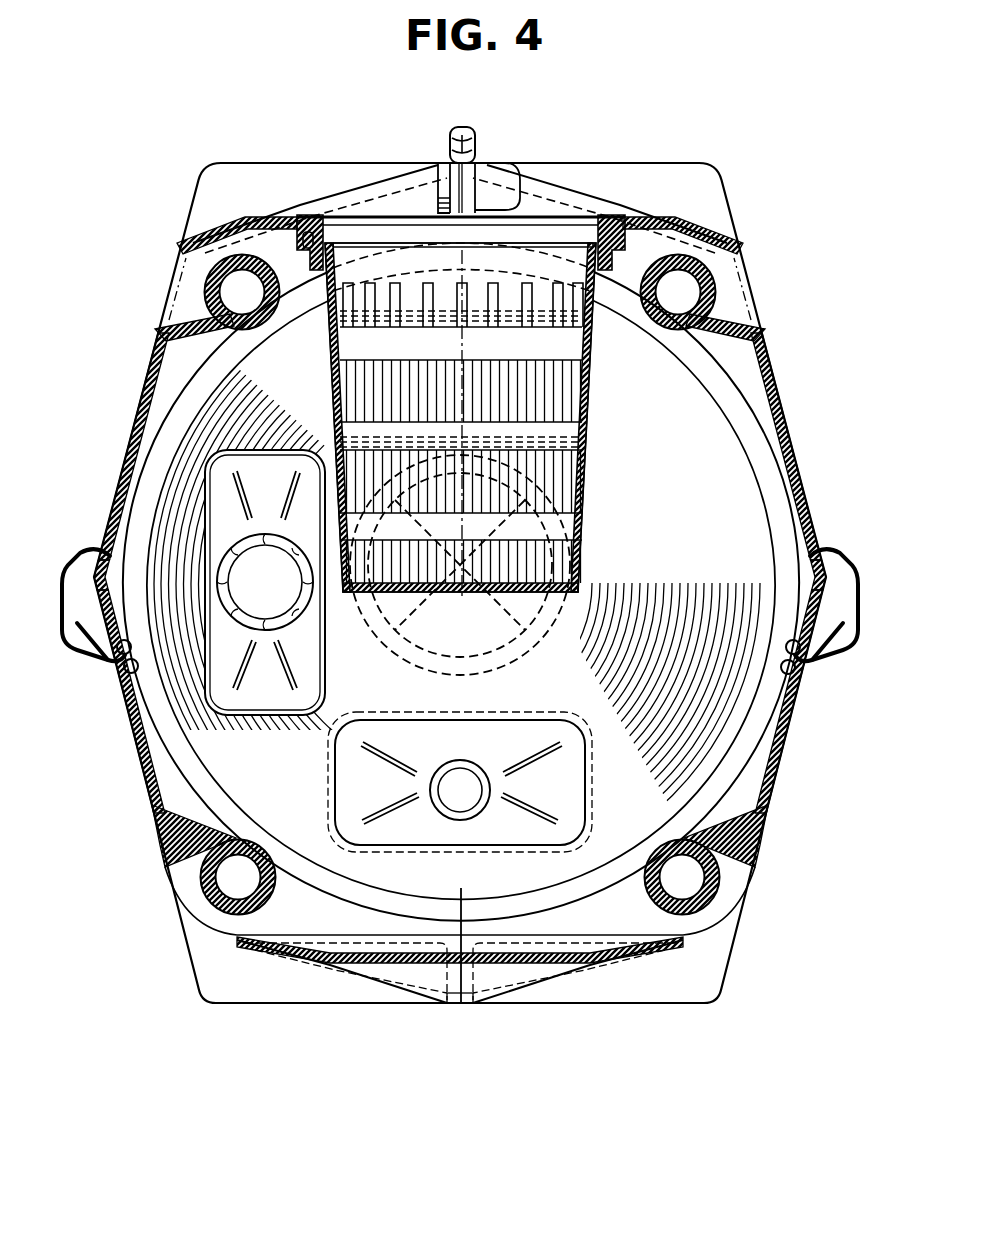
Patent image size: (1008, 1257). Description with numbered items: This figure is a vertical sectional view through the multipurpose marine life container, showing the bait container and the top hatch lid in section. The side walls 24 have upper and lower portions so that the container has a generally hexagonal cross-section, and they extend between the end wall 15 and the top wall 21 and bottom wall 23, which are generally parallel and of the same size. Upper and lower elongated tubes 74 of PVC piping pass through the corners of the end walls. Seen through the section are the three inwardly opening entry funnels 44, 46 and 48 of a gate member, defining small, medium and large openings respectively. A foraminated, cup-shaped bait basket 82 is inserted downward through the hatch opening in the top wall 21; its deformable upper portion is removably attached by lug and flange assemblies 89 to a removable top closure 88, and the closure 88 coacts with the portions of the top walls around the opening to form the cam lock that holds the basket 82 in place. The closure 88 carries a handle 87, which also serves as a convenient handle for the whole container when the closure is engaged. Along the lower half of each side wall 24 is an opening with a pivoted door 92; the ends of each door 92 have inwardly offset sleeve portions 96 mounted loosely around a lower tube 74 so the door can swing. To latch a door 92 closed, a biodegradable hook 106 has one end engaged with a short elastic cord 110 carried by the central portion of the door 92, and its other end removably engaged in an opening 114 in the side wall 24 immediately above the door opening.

The end wall 15 is at (726, 466).
The top wall 21 is at (612, 200).
The bottom wall 23 is at (391, 968).
The side wall 24 is at (127, 440).
The entry funnel 44 is at (477, 816).
The entry funnel 46 is at (222, 620).
The entry funnel 48 is at (535, 444).
The elongated tube 74 is at (262, 291).
The bait basket 82 is at (590, 483).
The handle 87 is at (461, 127).
The top closure 88 is at (312, 216).
The lug and flange assembly 89 is at (270, 256).
The door 92 is at (140, 783).
The sleeve portion 96 is at (260, 843).
The hook 106 is at (857, 610).
The elastic cord 110 is at (813, 658).
The opening 114 is at (822, 546).